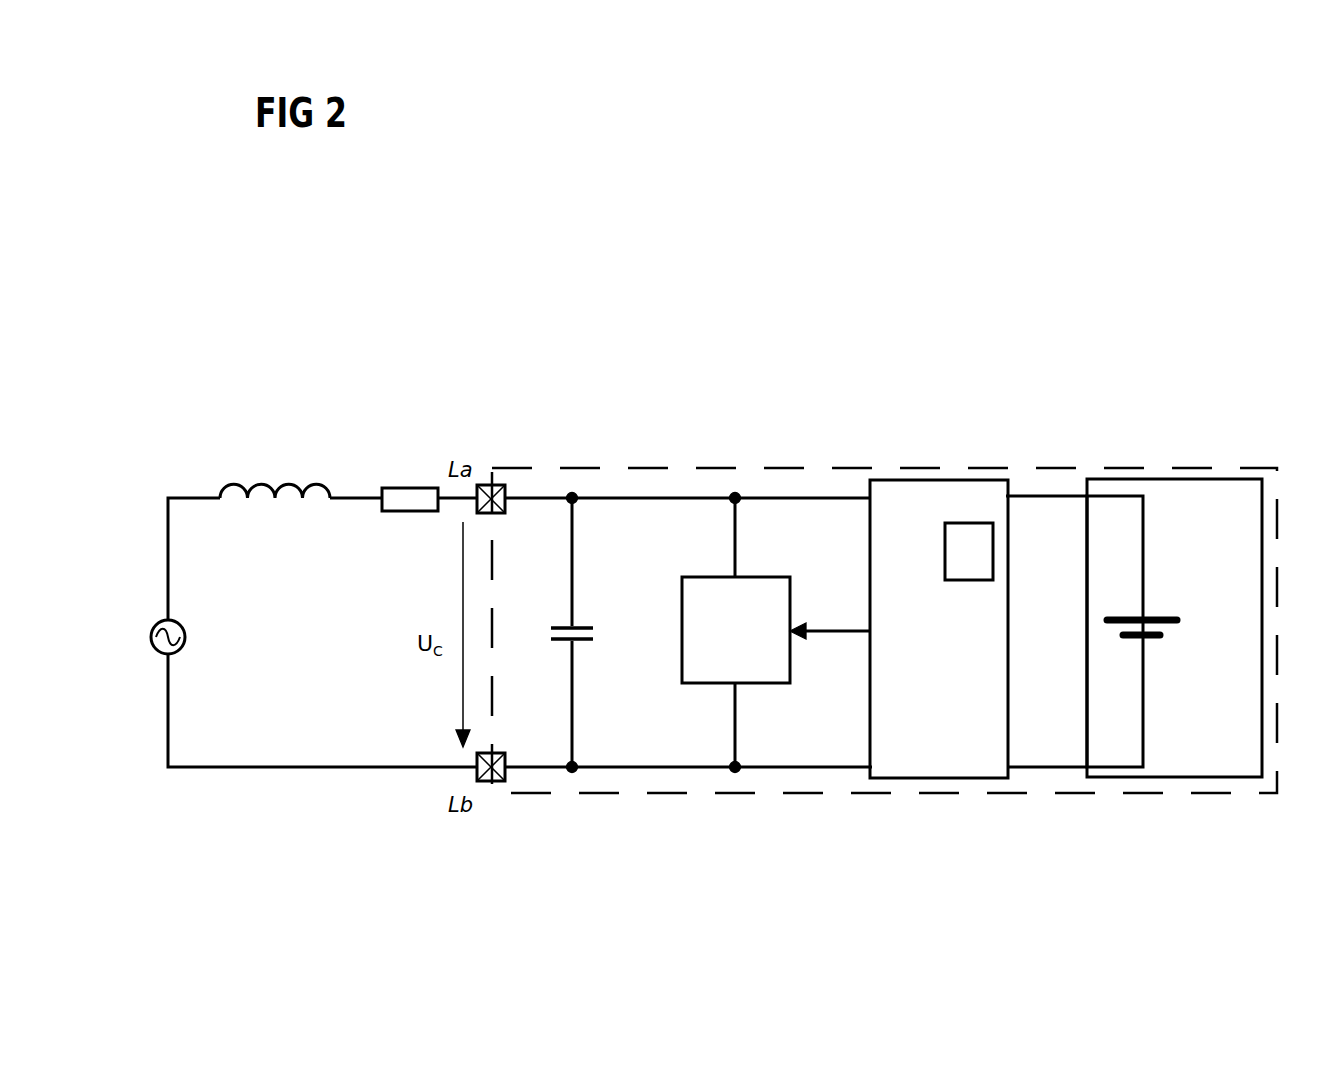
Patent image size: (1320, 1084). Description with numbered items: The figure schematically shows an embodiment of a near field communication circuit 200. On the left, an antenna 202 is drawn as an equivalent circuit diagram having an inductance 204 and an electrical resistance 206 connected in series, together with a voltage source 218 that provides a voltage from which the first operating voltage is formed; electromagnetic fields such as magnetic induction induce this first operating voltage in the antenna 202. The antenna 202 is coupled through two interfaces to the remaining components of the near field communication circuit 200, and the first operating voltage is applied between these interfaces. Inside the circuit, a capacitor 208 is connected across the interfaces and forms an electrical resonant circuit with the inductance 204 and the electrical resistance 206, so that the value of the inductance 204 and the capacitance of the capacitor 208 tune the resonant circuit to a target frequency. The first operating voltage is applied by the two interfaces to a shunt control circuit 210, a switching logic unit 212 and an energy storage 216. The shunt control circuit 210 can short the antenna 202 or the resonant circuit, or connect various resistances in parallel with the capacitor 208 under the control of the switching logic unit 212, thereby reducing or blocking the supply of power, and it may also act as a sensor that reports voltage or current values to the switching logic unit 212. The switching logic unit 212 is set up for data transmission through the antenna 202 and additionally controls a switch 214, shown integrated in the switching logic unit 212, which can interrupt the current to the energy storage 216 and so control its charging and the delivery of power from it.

The near field communication circuit 200 is at (712, 380).
The antenna 202 is at (323, 777).
The inductance 204 is at (257, 492).
The electrical resistance 206 is at (387, 487).
The capacitor 208 is at (558, 633).
The shunt control circuit 210 is at (705, 598).
The switching logic unit 212 is at (903, 512).
The switch 214 is at (980, 523).
The energy storage 216 is at (1185, 502).
The voltage source 218 is at (183, 622).